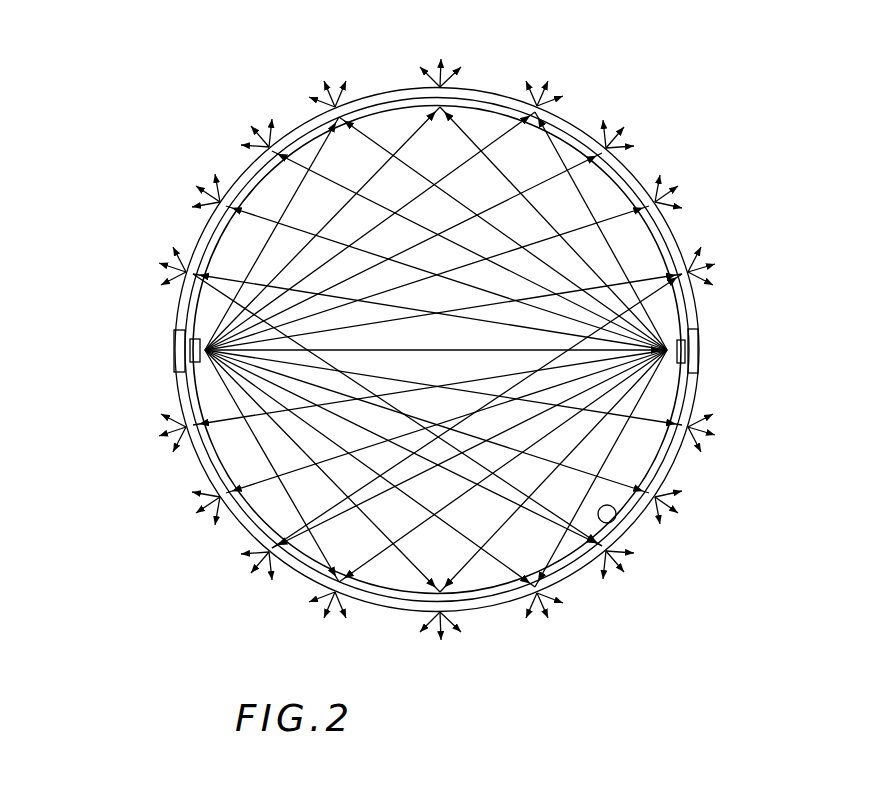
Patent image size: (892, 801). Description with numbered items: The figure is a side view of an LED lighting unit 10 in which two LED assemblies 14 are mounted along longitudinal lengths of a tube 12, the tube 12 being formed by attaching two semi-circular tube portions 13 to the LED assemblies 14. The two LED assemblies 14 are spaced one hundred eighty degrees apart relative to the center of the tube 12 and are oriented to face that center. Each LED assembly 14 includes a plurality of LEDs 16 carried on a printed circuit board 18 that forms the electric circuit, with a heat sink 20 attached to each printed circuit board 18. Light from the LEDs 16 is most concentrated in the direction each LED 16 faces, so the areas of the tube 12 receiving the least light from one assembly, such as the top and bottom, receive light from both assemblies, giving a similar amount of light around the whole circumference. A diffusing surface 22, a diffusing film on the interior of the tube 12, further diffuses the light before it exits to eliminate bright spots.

The LED lighting unit 10 is at (268, 100).
The tube 12 is at (228, 175).
The semi-circular tube portions 13 is at (187, 247).
The LED assembly 14 is at (165, 363).
The LEDs 16 is at (167, 405).
The printed circuit board 18 is at (173, 348).
The heat sink 20 is at (173, 327).
The diffusing surface 22 is at (614, 507).